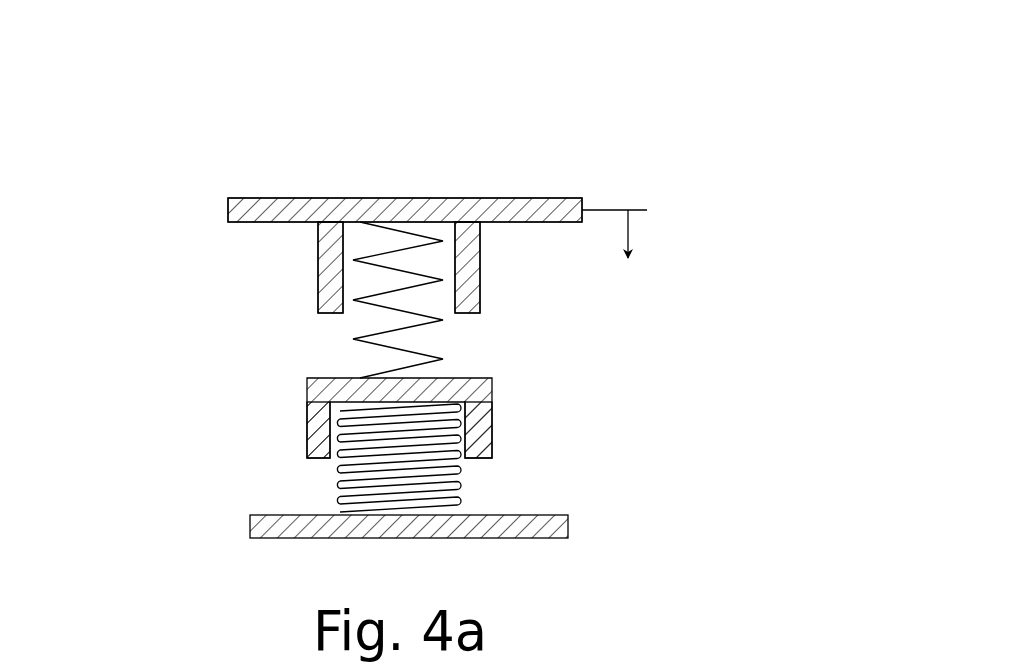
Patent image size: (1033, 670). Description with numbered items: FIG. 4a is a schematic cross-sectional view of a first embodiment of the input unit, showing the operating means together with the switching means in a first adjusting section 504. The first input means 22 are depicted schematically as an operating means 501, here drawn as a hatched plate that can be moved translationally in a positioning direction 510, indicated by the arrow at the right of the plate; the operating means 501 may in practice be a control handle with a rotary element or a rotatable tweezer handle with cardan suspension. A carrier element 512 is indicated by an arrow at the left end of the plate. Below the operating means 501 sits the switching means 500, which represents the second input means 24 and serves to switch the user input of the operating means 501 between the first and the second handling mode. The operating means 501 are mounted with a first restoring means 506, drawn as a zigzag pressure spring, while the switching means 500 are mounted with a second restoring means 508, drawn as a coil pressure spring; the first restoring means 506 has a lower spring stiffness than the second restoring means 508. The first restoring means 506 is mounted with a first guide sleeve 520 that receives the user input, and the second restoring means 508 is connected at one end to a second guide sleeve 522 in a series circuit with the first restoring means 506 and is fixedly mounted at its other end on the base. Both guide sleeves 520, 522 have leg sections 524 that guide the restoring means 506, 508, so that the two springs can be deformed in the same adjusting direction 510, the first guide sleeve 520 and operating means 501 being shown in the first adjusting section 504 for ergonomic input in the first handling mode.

The first input means 22 is at (604, 94).
The second input means 24 is at (646, 658).
The switching means 500 is at (530, 400).
The operating means 501 is at (385, 207).
The first adjusting section 504 is at (183, 277).
The first restoring means 506 is at (370, 334).
The second restoring means 508 is at (440, 487).
The positioning direction 510 is at (632, 230).
The carrier plate 512 is at (190, 200).
The first guide sleeve 520 is at (465, 207).
The second guide sleeve 522 is at (323, 390).
The leg sections 524 is at (472, 278).